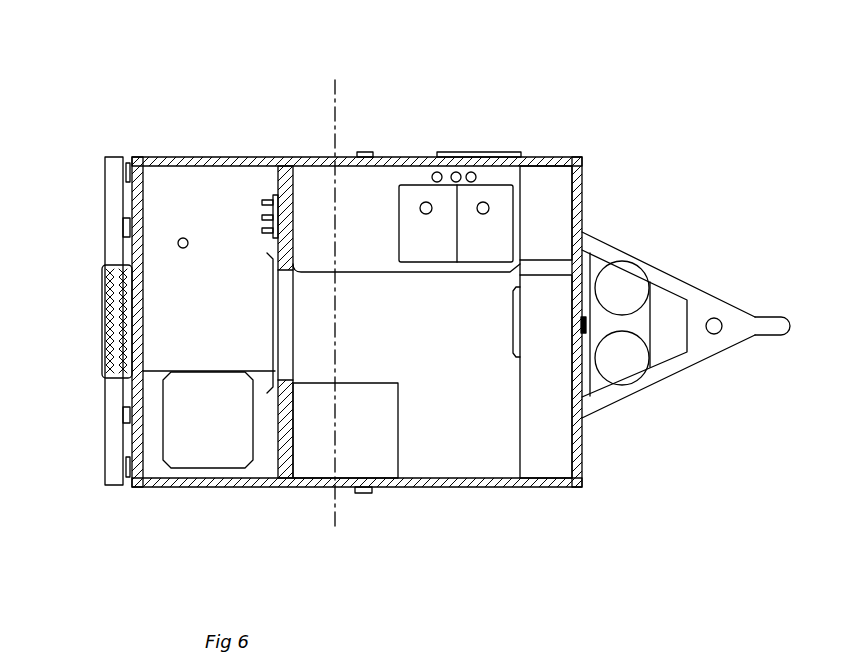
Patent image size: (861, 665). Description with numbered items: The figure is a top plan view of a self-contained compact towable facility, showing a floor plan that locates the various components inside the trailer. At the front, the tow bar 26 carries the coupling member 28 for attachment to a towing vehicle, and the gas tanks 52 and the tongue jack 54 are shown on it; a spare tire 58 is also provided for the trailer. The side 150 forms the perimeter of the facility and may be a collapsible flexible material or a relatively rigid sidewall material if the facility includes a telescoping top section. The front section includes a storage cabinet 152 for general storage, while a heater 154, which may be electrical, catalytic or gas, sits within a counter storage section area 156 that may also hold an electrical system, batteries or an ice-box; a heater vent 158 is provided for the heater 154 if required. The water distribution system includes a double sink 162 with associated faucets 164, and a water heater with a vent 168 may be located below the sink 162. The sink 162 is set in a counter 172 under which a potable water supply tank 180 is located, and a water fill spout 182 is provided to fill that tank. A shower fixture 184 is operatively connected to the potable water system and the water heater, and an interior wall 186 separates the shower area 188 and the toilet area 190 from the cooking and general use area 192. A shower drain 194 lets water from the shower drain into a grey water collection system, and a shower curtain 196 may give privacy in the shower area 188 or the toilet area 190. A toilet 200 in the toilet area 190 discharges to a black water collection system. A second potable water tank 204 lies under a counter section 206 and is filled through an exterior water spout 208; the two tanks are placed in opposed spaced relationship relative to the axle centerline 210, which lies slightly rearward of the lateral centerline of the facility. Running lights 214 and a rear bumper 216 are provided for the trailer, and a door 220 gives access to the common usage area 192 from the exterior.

The tow bar 26 is at (673, 367).
The coupling member 28 is at (782, 327).
The gas tanks 52 is at (632, 275).
The tongue jack 54 is at (715, 315).
The spare tire 58 is at (100, 322).
The side 150 is at (582, 178).
The storage cabinet 152 is at (548, 177).
The heater 154 is at (516, 360).
The counter storage section area 156 is at (545, 455).
The heater vent 158 is at (585, 316).
The double sink 162 is at (412, 192).
The faucets 164 is at (456, 173).
The vent 168 is at (500, 153).
The counter 172 is at (350, 160).
The potable water supply tank 180 is at (356, 260).
The water fill spout 182 is at (370, 154).
The shower fixture 184 is at (271, 195).
The interior wall 186 is at (287, 160).
The shower area 188 is at (228, 295).
The toilet area 190 is at (228, 432).
The cooking and general use area 192 is at (448, 329).
The shower drain 194 is at (182, 238).
The shower curtain 196 is at (272, 335).
The toilet 200 is at (170, 468).
The second potable water tank 204 is at (376, 412).
The counter section 206 is at (313, 458).
The exterior water spout 208 is at (362, 493).
The axle centerline 210 is at (337, 495).
The running lights 214 is at (128, 172).
The rear bumper 216 is at (113, 420).
The door 220 is at (440, 488).